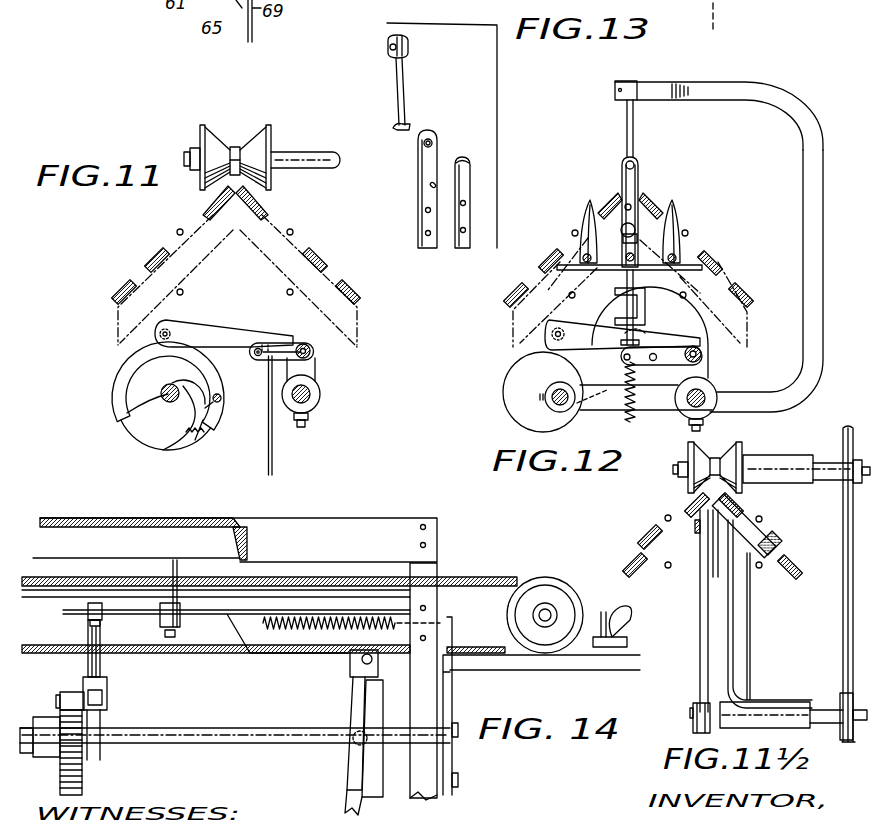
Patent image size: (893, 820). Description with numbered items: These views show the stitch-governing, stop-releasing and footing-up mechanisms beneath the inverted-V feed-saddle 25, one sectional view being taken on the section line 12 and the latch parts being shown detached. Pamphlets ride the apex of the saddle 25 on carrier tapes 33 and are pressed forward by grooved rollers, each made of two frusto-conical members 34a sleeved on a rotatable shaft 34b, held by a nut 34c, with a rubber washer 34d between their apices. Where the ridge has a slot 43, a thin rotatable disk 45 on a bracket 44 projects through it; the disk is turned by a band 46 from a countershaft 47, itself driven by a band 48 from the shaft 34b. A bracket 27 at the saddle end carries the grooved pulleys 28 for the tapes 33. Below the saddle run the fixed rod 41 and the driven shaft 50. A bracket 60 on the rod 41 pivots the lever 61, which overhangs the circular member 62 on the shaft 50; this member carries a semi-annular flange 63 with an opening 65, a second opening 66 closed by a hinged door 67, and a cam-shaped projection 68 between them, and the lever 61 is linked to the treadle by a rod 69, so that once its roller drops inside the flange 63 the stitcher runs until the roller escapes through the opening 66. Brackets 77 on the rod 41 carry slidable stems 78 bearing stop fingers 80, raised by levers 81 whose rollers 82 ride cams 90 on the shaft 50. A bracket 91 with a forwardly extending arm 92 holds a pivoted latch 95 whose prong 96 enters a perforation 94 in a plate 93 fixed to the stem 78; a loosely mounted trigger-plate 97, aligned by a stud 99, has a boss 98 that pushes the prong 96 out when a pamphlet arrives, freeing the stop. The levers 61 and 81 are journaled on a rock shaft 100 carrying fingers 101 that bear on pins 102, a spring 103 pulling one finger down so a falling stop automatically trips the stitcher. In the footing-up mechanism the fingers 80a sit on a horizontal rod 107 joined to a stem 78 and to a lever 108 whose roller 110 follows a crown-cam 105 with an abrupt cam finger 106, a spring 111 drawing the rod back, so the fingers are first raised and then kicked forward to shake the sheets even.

In FIG. 12, the frame bracket 12 is at (709, 32).
In FIG. 12, the feed-saddle 25 is at (721, 268).
The feed-saddle 25 is at (651, 538).
In FIG. 14, the feed-saddle 25 is at (332, 527).
In FIG. 14, the bracket 27 is at (507, 663).
In FIG. 14, the grooved pulleys 28 is at (563, 597).
In FIG. 11, the carrier-belts or tapes 33 is at (177, 232).
In FIG. 12, the carrier-belts or tapes 33 is at (689, 233).
The carrier-belts or tapes 33 is at (763, 519).
In FIG. 14, the carrier-belts or tapes 33 is at (457, 585).
In FIG. 11, the frusto-conical members 34a is at (263, 128).
The frusto-conical members 34a is at (693, 490).
In FIG. 11, the rotatable shaft 34b is at (292, 152).
The rotatable shaft 34b is at (853, 487).
In FIG. 11, the nut 34c is at (190, 152).
In FIG. 11, the washer 34d is at (234, 147).
The washer 34d is at (717, 449).
In FIG. 11, the fixed rod 41 is at (320, 405).
In FIG. 12, the fixed rod 41 is at (713, 412).
The slot 43 is at (710, 495).
The bracket 44 is at (737, 627).
The rotatable disk 45 is at (718, 562).
The band 46 is at (700, 625).
The countershaft 47 is at (827, 707).
The band 48 is at (847, 605).
In FIG. 11, the shaft 50 is at (127, 413).
In FIG. 12, the shaft 50 is at (560, 382).
In FIG. 14, the shaft 50 is at (212, 737).
In FIG. 11, the bracket 60 is at (316, 369).
In FIG. 11, the lever 61 is at (203, 322).
In FIG. 11, the circular member 62 is at (164, 389).
In FIG. 11, the semi-annular flange 63 is at (128, 366).
In FIG. 11, the opening 65 is at (140, 436).
In FIG. 11, the opening 66 is at (207, 397).
In FIG. 11, the hinged door 67 is at (221, 398).
In FIG. 11, the cam-shaped projection 68 is at (199, 415).
In FIG. 11, the rod 69 is at (275, 459).
In FIG. 12, the bracket 77 is at (712, 377).
In FIG. 14, the bracket 77 is at (100, 720).
In FIG. 12, the stem 78 is at (626, 283).
In FIG. 14, the stem 78 is at (102, 667).
In FIG. 12, the stop fingers 80 is at (590, 210).
In FIG. 14, the fingers 80a is at (173, 562).
In FIG. 12, the lever 81 is at (578, 336).
In FIG. 14, the lever 81 is at (108, 688).
In FIG. 14, the roller 82 is at (68, 693).
In FIG. 12, the cam 90 is at (517, 403).
In FIG. 14, the cam 90 is at (80, 775).
In FIG. 12, the bracket 91 is at (816, 242).
In FIG. 12, the arm 92 is at (747, 88).
In FIG. 13, the plate 93 is at (420, 185).
In FIG. 12, the plate 93 is at (621, 175).
In FIG. 13, the perforation 94 is at (437, 142).
In FIG. 13, the latch 95 is at (407, 79).
In FIG. 12, the latch 95 is at (636, 132).
In FIG. 13, the prong 96 is at (410, 127).
In FIG. 13, the trigger-plate 97 is at (462, 177).
In FIG. 12, the trigger-plate 97 is at (638, 182).
In FIG. 13, the boss 98 is at (459, 160).
In FIG. 13, the stud 99 is at (435, 190).
In FIG. 12, the stud 99 is at (626, 209).
In FIG. 11, the rock shaft 100 is at (318, 352).
In FIG. 12, the rock shaft 100 is at (702, 354).
In FIG. 11, the finger 101 is at (283, 343).
In FIG. 12, the finger 101 is at (680, 324).
In FIG. 11, the pin 102 is at (257, 357).
In FIG. 12, the pin 102 is at (653, 361).
In FIG. 12, the spring 103 is at (627, 417).
In FIG. 14, the crown-cam 105 is at (378, 692).
In FIG. 14, the cam finger 106 is at (335, 788).
In FIG. 14, the horizontal rod 107 is at (63, 609).
In FIG. 14, the lever 108 is at (358, 713).
In FIG. 14, the roller 110 is at (353, 743).
In FIG. 14, the spring 111 is at (322, 619).